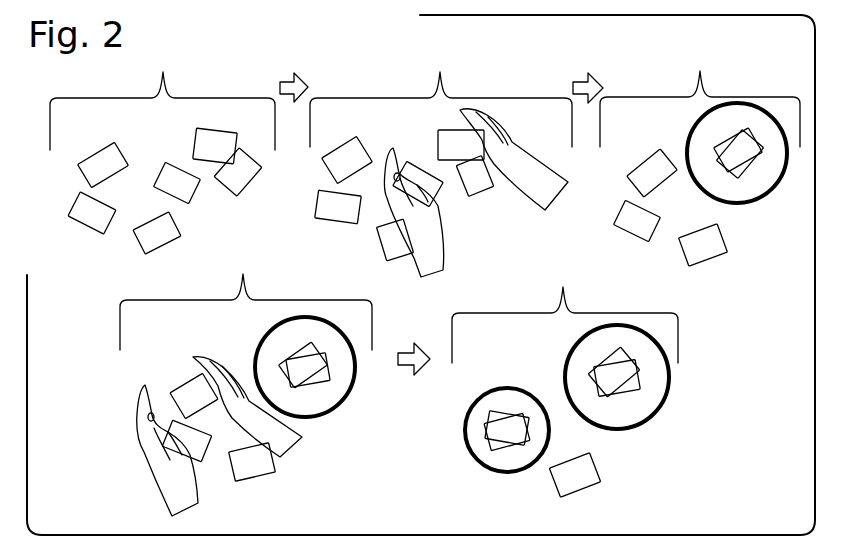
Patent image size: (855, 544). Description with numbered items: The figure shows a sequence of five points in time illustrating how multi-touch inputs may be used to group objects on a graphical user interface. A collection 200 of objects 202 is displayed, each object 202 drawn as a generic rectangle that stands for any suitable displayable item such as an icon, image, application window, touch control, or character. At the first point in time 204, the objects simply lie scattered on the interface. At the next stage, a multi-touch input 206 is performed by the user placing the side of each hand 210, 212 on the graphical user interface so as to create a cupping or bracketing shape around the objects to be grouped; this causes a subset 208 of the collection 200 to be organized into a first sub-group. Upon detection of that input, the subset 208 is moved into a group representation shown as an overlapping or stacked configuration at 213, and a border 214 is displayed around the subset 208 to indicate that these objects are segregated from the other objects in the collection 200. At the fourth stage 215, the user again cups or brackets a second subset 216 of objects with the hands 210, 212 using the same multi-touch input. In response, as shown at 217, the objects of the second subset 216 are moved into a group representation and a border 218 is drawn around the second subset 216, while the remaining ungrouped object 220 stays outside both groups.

The collection of objects 200 is at (91, 136).
The object 202 is at (205, 145).
The first point in time 204 is at (162, 99).
The multi-touch input 206 is at (441, 98).
The subset of objects 208 is at (398, 125).
The hand 210 is at (422, 210).
The hand 212 is at (512, 162).
The group representation stage 213 is at (700, 98).
The border 214 is at (686, 142).
The second grouping stage 215 is at (246, 299).
The second subset of objects 216 is at (170, 352).
The second group representation stage 217 is at (565, 313).
The border 218 is at (492, 472).
The remaining card 220 is at (585, 465).